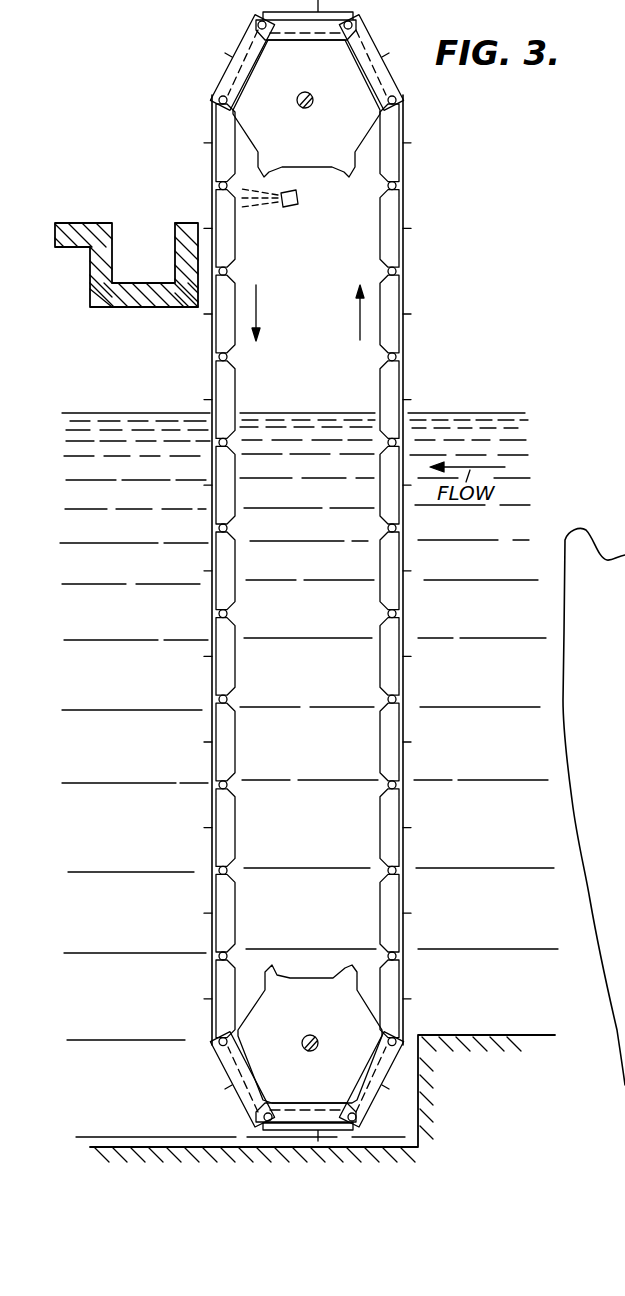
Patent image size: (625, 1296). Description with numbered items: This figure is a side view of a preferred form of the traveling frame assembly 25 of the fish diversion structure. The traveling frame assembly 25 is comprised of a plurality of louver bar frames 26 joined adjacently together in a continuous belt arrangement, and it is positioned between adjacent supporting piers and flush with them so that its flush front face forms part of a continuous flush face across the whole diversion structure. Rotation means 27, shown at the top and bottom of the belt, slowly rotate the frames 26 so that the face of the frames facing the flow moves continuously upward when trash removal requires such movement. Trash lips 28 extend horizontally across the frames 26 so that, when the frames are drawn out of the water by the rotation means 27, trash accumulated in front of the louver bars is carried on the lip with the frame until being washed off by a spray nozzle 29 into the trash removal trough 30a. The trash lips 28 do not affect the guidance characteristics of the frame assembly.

The traveling frame assembly 25 is at (238, 30).
The louver bar frame 26 is at (412, 379).
The rotation means 27 is at (307, 571).
The trash lip 28 is at (405, 284).
The spray nozzle 29 is at (289, 208).
The trash removal trough 30a is at (140, 307).